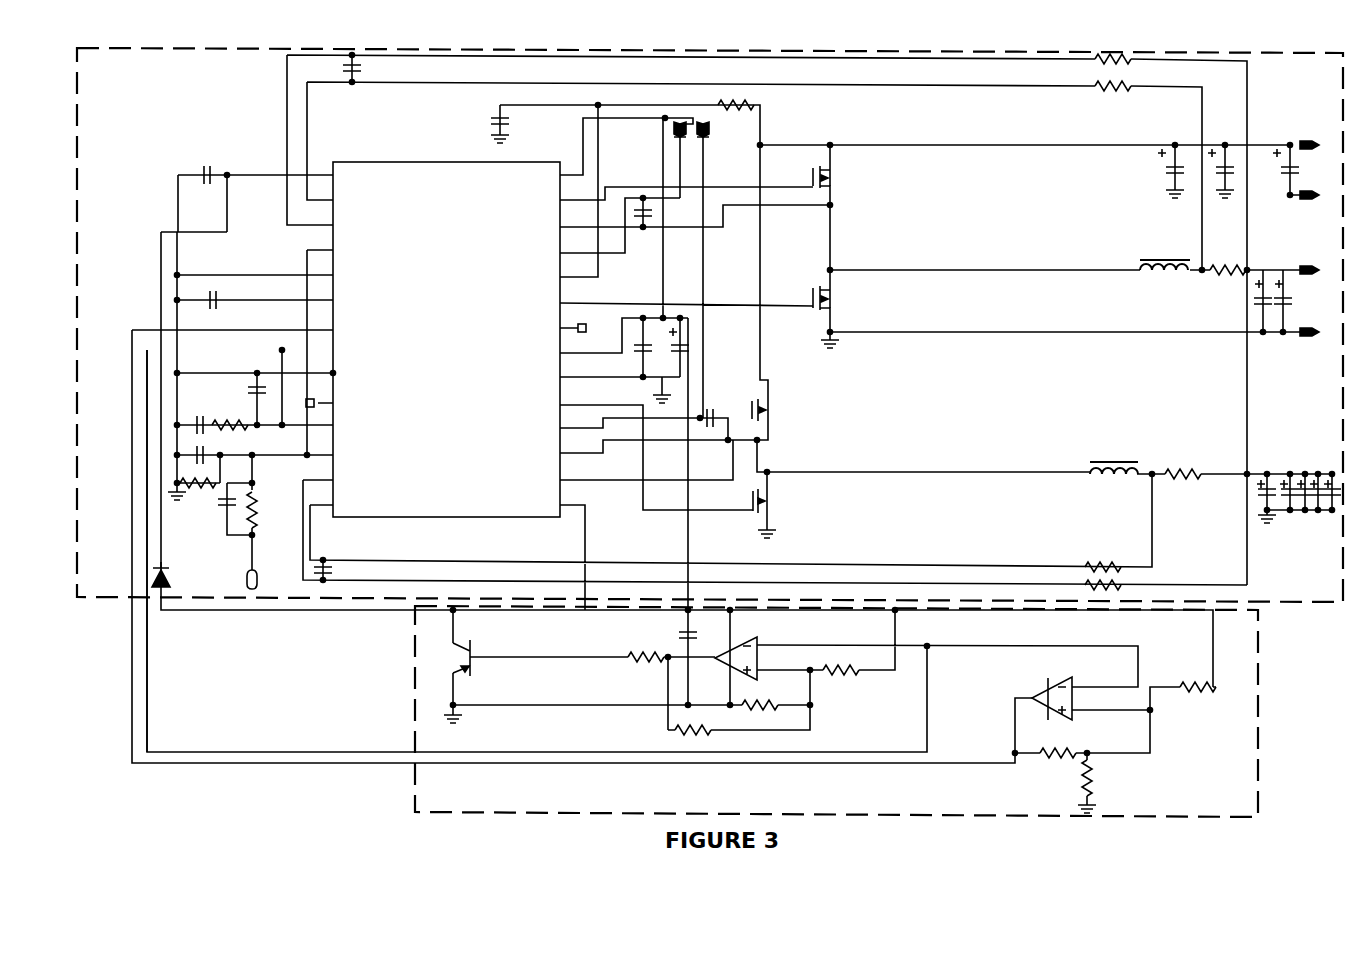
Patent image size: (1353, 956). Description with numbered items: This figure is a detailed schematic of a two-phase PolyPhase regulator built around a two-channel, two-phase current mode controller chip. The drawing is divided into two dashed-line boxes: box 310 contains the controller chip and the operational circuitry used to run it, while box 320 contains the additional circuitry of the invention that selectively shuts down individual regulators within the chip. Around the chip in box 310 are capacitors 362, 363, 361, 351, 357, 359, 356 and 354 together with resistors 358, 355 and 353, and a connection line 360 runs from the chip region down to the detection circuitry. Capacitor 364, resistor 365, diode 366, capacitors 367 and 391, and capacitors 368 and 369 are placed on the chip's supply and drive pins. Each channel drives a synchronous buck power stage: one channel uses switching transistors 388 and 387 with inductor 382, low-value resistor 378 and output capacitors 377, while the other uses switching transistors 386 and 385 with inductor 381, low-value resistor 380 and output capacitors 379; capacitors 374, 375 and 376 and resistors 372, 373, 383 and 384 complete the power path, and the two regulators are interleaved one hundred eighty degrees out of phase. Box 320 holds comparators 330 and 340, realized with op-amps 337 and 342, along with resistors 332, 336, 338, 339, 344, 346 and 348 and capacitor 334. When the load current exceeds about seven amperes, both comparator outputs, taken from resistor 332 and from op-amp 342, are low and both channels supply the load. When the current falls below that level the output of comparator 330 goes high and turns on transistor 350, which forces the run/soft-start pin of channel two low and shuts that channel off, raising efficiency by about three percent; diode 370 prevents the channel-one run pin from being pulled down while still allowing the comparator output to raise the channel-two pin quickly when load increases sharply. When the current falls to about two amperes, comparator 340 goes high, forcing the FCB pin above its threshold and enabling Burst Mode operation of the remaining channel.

The box 310 is at (390, 599).
The box 320 is at (415, 658).
The comparator 330 is at (778, 627).
The resistor 332 is at (626, 664).
The capacitor 334 is at (680, 633).
The resistor 336 is at (836, 676).
The operational amplifier 337 is at (757, 660).
The resistor 338 is at (756, 700).
The resistor 339 is at (700, 725).
The comparator 340 is at (1024, 671).
The op-amp 342 is at (1060, 677).
The resistor 344 is at (1064, 748).
The resistor 346 is at (1092, 776).
The resistor 348 is at (1196, 692).
The transistor 350 is at (475, 645).
The capacitor 351 is at (344, 571).
The resistor 353 is at (266, 487).
The capacitor 354 is at (218, 508).
The resistor 355 is at (198, 496).
The capacitor 356 is at (219, 447).
The capacitor 357 is at (197, 418).
The resistor 358 is at (227, 415).
The capacitor 359 is at (248, 384).
The feedback line 360 is at (147, 655).
The capacitor 361 is at (218, 304).
The capacitor 362 is at (207, 184).
The capacitor 363 is at (361, 66).
The capacitor 364 is at (500, 124).
The resistor 365 is at (718, 103).
The diode 366 is at (712, 125).
The capacitor 367 is at (652, 214).
The capacitor 368 is at (640, 352).
The capacitor 369 is at (680, 352).
The diode 370 is at (170, 578).
The resistor 372 is at (1097, 63).
The resistor 373 is at (1120, 90).
The capacitor 374 is at (1175, 176).
The capacitor 375 is at (1225, 175).
The capacitor 376 is at (1290, 176).
The capacitors 377 is at (1283, 310).
The resistor 378 is at (1218, 266).
The capacitors 379 is at (1264, 500).
The resistor 380 is at (1180, 470).
The inductor 381 is at (1108, 458).
The inductor 382 is at (1150, 256).
The resistor 383 is at (1097, 563).
The resistor 384 is at (1121, 583).
The switching transistor 385 is at (771, 500).
The switching transistor 386 is at (772, 410).
The switching transistor 387 is at (832, 296).
The switching transistor 388 is at (832, 178).
The capacitor 391 is at (700, 424).